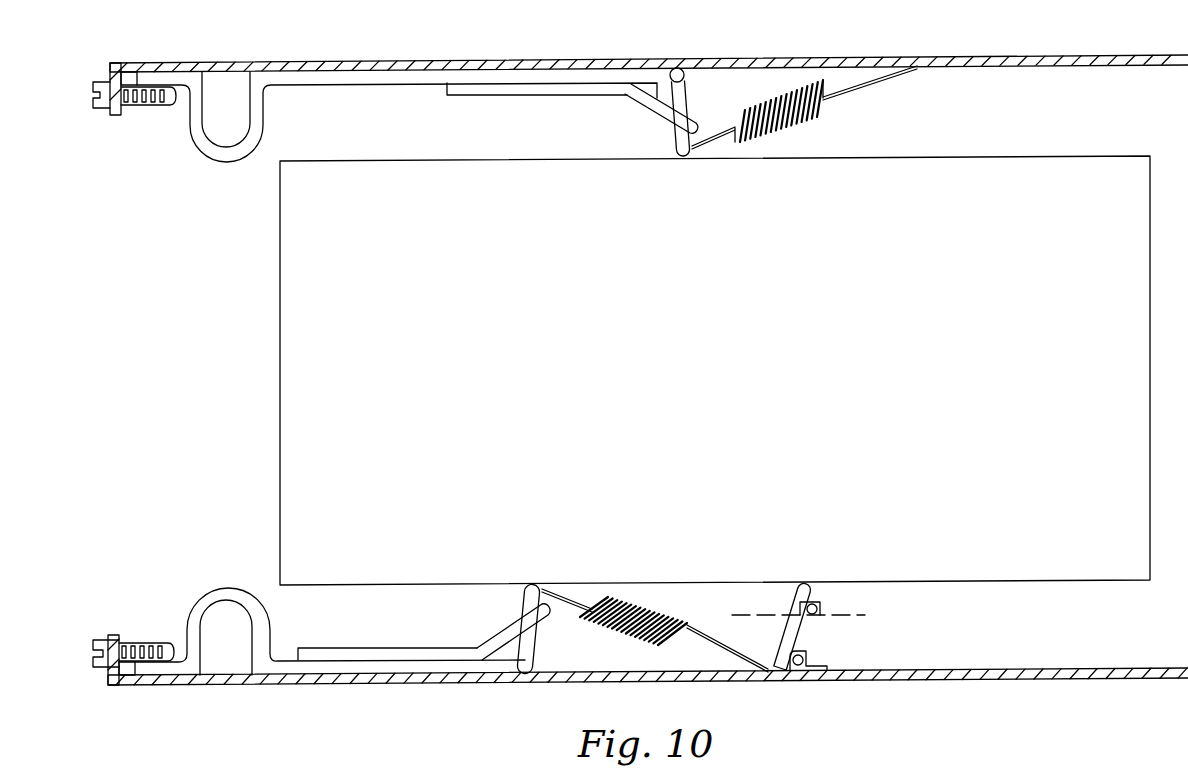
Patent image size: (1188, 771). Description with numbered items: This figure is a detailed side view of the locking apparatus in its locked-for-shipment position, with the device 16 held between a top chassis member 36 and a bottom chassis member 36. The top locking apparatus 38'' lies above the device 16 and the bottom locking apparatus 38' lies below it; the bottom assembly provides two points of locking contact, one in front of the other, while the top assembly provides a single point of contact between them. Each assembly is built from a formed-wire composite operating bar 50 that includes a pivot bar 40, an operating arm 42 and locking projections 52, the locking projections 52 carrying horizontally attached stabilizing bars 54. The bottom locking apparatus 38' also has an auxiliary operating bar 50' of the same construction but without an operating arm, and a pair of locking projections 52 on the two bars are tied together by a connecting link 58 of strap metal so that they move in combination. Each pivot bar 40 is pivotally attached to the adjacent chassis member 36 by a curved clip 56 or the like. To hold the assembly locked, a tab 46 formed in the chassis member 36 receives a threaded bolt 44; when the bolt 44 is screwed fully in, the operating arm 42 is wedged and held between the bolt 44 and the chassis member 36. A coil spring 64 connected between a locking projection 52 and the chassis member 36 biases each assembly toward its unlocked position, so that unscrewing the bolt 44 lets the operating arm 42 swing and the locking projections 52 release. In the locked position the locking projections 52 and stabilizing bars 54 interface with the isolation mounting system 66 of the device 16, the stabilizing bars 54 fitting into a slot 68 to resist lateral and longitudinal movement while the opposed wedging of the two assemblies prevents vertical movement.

The device 16 is at (688, 362).
The chassis member 36 is at (970, 60).
The bottom locking apparatus 38' is at (431, 531).
The top locking apparatus 38'' is at (474, 178).
The pivot bar 40 is at (675, 82).
The operating arm 42 is at (350, 87).
The threaded bolt 44 is at (145, 105).
The tab 46 is at (113, 117).
The composite operating bar 50 is at (448, 617).
The auxiliary operating bar 50' is at (780, 212).
The locking projection 52 is at (670, 142).
The stabilizing bar 54 is at (688, 126).
The curved clip 56 is at (817, 667).
The connecting link 58 is at (697, 581).
The coil spring 64 is at (803, 125).
The isolation mounting system 66 is at (757, 615).
The slot 68 is at (817, 605).